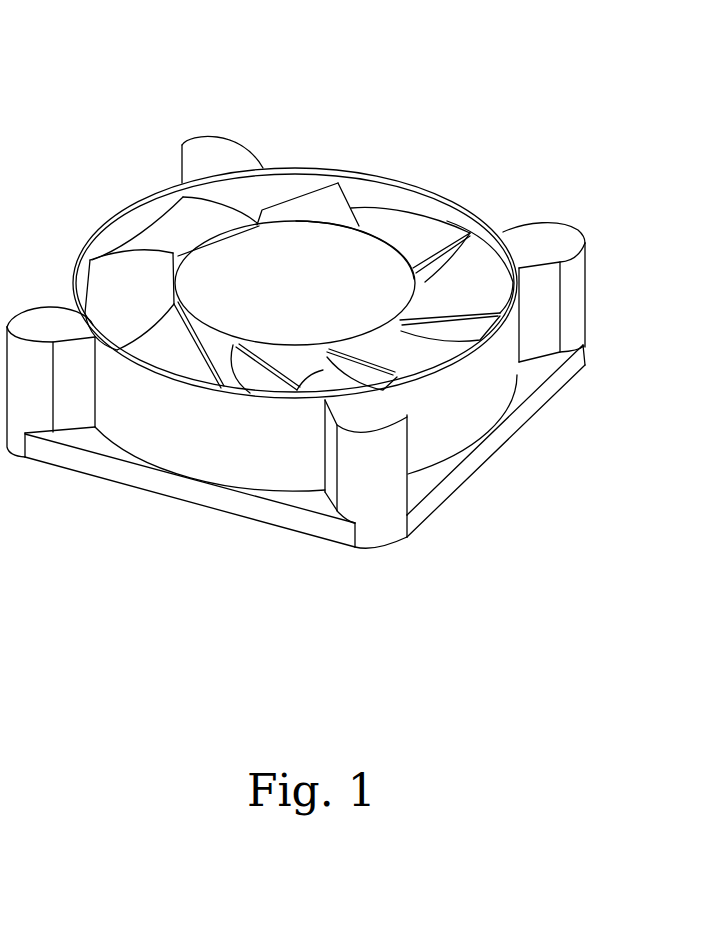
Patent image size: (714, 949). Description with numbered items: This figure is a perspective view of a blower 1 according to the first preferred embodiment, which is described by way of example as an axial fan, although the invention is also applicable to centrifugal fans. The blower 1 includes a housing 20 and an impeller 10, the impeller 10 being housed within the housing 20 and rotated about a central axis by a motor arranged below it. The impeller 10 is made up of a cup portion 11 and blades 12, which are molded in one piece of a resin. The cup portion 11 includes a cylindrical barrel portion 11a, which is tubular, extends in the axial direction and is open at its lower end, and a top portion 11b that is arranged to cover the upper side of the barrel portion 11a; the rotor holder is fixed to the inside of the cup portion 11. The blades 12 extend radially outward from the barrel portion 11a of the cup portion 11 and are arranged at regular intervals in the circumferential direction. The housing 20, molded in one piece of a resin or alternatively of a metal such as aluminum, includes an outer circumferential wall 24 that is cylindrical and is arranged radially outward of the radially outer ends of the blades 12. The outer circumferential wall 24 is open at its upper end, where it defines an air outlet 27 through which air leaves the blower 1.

The blower 1 is at (553, 107).
The impeller 10 is at (323, 63).
The cup portion 11 is at (272, 258).
The barrel portion 11a is at (320, 373).
The top portion 11b is at (355, 270).
The blades 12 is at (200, 208).
The housing 20 is at (473, 218).
The outer circumferential wall 24 is at (477, 372).
The air outlet 27 is at (123, 215).